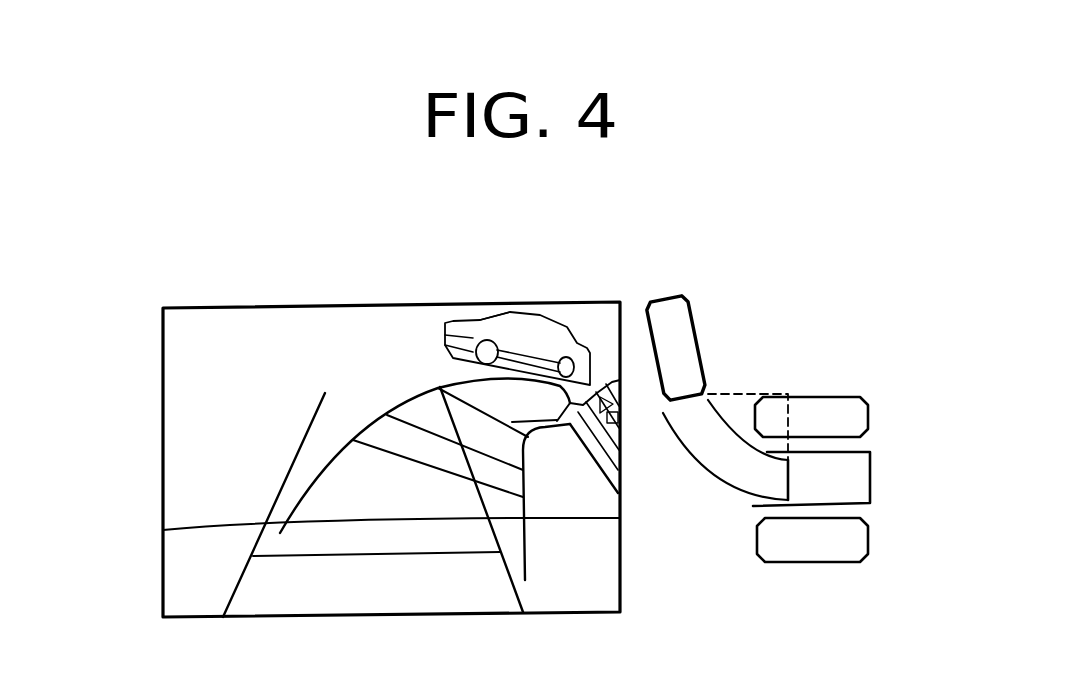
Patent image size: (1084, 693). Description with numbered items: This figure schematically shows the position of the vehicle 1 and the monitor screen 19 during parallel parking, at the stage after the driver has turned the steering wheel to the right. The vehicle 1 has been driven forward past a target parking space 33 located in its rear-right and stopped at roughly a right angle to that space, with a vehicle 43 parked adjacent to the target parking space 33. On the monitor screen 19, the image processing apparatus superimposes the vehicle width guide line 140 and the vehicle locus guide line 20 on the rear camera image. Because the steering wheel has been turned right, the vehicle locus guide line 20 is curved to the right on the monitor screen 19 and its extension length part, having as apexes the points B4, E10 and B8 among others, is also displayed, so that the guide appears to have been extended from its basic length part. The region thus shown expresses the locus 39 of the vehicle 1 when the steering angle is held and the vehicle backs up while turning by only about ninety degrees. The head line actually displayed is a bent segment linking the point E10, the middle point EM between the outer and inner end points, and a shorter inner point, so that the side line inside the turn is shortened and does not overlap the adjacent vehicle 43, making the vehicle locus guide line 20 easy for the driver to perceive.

The monitor screen 19 is at (263, 308).
The vehicle locus guide line 20 is at (386, 397).
The vehicle width guide line 140 is at (298, 448).
The point B4 is at (440, 387).
The target parking space 33 is at (468, 353).
The point E10 is at (587, 377).
The point B8 is at (543, 430).
The vehicle 43 is at (596, 472).
The middle point EM is at (620, 402).
The vehicle 1 is at (698, 338).
The locus 39 is at (723, 463).